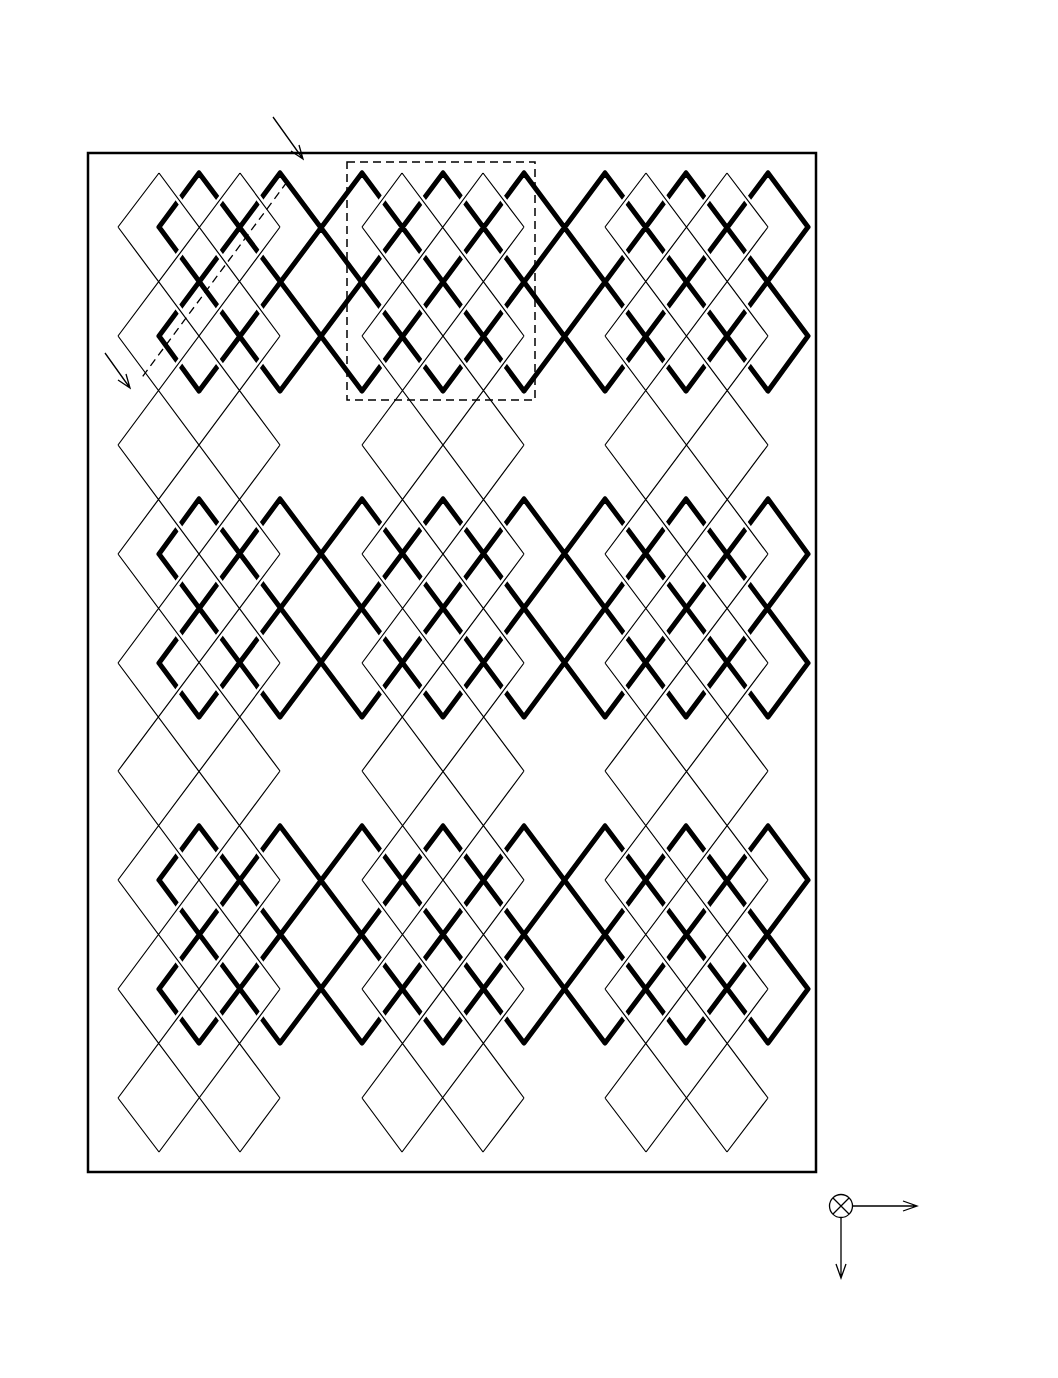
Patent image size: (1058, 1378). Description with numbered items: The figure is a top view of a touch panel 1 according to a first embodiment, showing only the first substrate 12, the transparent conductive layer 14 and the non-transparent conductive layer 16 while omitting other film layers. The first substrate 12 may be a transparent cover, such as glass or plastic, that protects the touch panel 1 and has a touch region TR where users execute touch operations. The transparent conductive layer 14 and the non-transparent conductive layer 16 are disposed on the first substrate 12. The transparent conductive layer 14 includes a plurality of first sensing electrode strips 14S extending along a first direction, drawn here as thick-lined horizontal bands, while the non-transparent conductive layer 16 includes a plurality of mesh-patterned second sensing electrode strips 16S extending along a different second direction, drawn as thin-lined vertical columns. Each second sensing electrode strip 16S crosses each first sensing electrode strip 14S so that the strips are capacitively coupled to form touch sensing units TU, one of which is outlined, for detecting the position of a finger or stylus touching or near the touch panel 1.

The touch panel 1 is at (816, 94).
The first substrate 12 is at (803, 178).
The transparent conductive layer 14 is at (892, 958).
The first sensing electrode strip 14S is at (809, 266).
The non-transparent conductive layer 16 is at (730, 65).
The second sensing electrode strip 16S is at (193, 149).
The touch sensing unit TU is at (538, 214).
The touch region TR is at (129, 170).